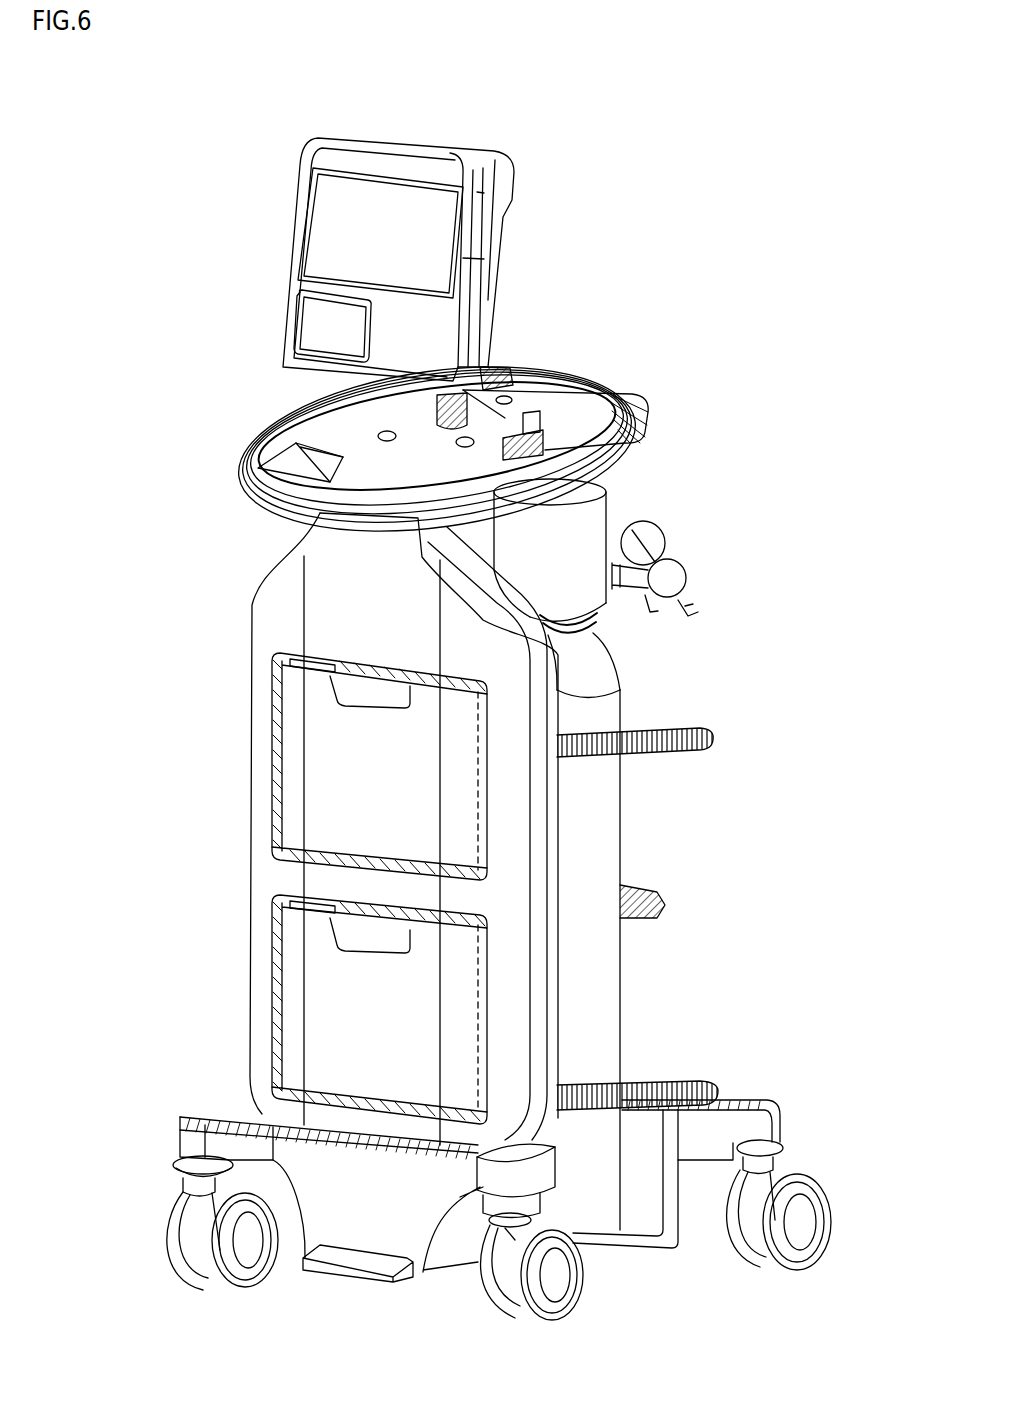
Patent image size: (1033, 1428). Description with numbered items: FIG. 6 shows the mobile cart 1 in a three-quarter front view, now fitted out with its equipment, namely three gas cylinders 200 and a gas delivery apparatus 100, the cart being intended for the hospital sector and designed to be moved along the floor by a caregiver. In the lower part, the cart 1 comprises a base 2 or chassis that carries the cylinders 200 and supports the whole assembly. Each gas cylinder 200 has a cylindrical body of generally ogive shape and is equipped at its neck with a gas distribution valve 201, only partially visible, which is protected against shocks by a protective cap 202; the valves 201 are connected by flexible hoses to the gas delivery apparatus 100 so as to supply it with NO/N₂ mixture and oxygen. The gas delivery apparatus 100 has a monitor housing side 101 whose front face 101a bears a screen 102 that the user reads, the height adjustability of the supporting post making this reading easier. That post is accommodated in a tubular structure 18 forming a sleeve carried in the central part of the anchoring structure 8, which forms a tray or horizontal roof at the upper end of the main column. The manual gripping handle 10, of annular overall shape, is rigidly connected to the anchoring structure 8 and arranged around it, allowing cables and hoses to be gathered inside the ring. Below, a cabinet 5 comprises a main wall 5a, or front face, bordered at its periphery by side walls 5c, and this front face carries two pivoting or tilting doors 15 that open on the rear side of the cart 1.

The mobile cart 1 is at (786, 184).
The gas delivery apparatus 100 is at (524, 160).
The monitor housing side 101 is at (499, 262).
The front face 101a is at (293, 276).
The screen 102 is at (346, 210).
The anchoring structure 8 is at (534, 396).
The tubular structure 18 is at (366, 404).
The manual gripping handle 10 is at (234, 475).
The cabinet 5 is at (246, 747).
The main wall 5a is at (384, 609).
The side walls 5c is at (538, 606).
The doors 15 is at (353, 977).
The gas cylinders 200 is at (624, 820).
The protective cap 202 is at (594, 504).
The gas distribution valve 201 is at (614, 601).
The base 2 is at (642, 1253).